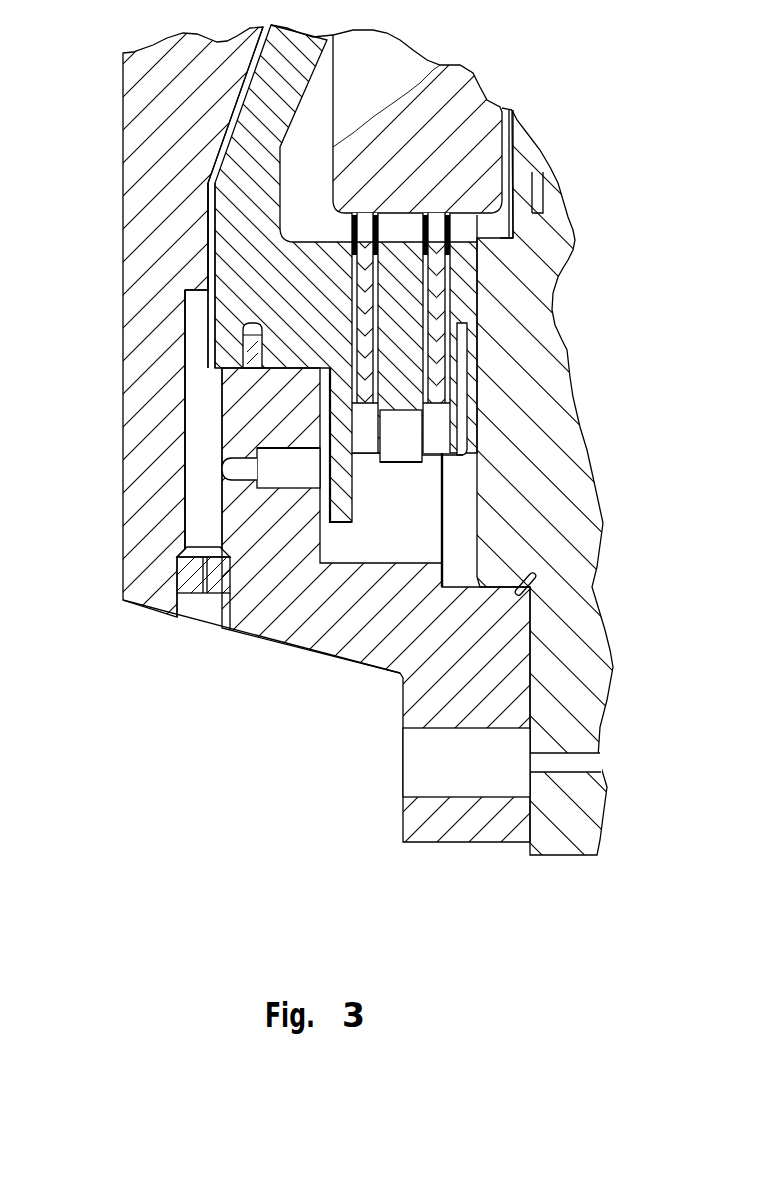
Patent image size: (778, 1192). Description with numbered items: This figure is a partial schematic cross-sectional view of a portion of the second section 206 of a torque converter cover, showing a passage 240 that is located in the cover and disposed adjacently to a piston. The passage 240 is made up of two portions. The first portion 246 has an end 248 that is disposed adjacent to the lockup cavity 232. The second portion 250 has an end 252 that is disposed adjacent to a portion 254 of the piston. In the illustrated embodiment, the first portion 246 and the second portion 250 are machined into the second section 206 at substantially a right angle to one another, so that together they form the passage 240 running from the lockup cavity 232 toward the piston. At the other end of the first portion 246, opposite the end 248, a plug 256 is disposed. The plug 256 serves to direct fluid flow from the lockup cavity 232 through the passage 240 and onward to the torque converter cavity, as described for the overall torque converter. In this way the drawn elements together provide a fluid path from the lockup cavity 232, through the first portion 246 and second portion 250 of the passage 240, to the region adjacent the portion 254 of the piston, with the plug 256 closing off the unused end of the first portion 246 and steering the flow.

The second section 206 is at (180, 167).
The lockup cavity 232 is at (217, 240).
The passage 240 is at (175, 478).
The first portion 246 is at (195, 422).
The end 248 is at (195, 305).
The second portion 250 is at (180, 575).
The end 252 is at (310, 478).
The portion of the piston 254 is at (352, 475).
The plug 256 is at (193, 593).